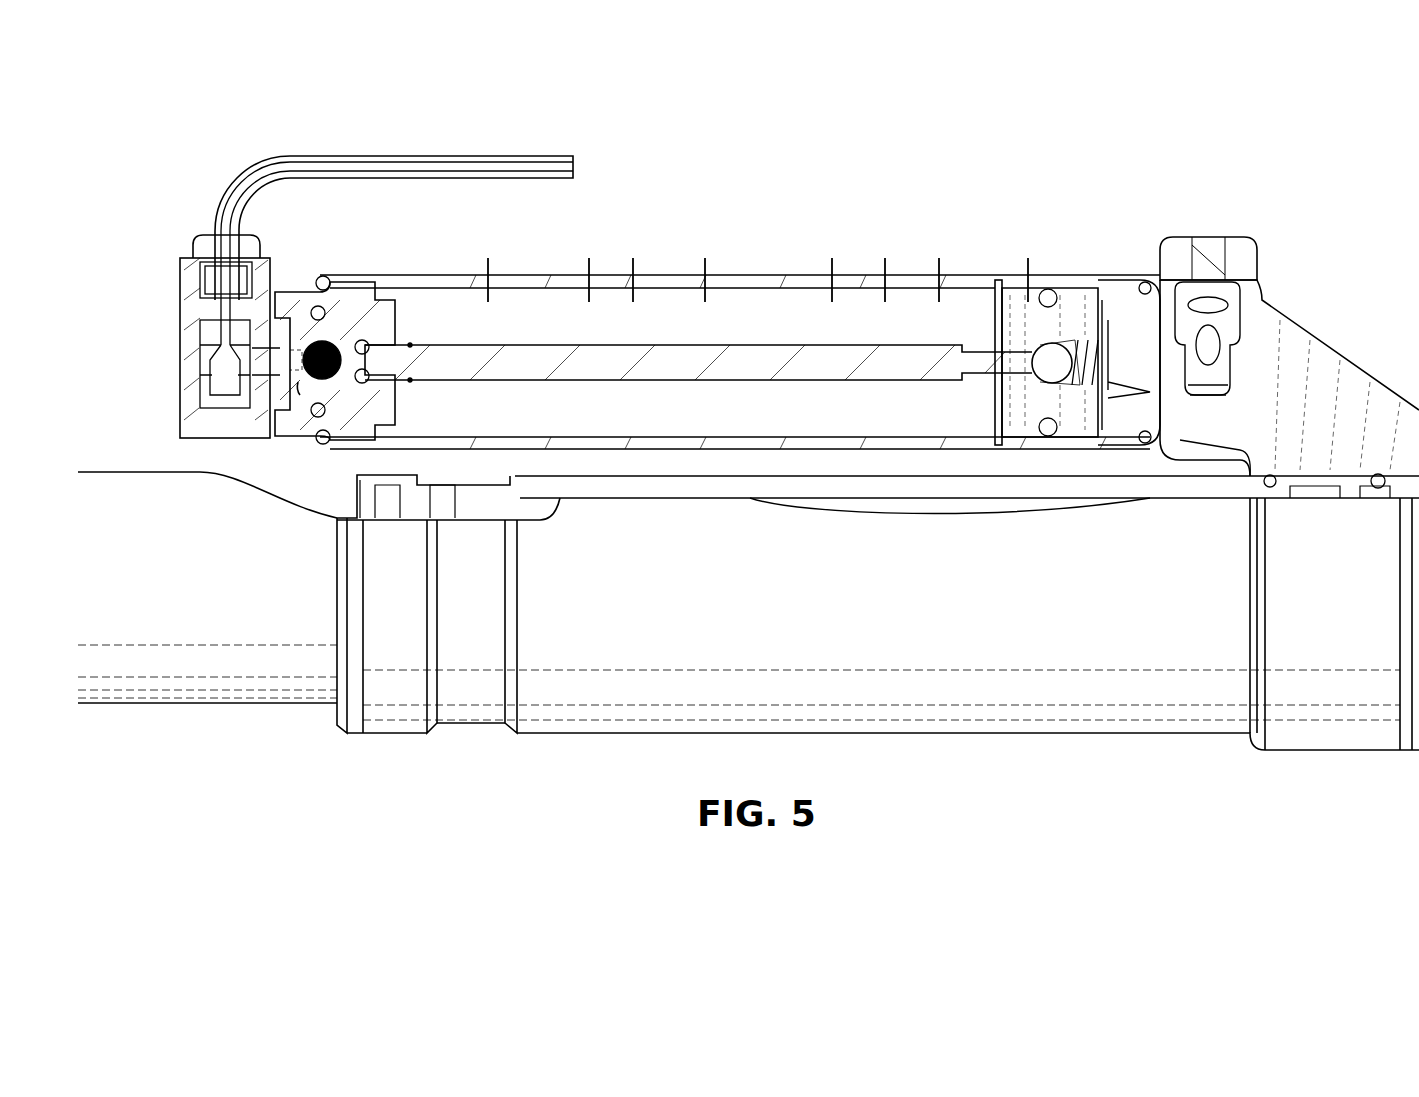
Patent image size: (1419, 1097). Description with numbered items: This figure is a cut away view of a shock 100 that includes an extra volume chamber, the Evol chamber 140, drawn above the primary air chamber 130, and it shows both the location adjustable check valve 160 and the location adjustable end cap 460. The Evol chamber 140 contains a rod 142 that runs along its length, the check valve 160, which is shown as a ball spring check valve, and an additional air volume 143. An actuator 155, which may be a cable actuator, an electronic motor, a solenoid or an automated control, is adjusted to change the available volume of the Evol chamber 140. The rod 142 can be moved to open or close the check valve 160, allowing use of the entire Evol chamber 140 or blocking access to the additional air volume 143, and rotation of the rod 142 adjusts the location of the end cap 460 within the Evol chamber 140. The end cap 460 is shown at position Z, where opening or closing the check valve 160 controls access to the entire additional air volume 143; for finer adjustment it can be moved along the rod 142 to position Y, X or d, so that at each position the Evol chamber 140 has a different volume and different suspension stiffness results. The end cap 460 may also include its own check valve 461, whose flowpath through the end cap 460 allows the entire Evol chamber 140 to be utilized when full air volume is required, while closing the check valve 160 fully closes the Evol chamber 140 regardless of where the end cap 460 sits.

The shock 100 is at (341, 97).
The primary air chamber 130 is at (982, 735).
The Evol chamber 140 is at (776, 285).
The rod 142 is at (472, 365).
The additional air volume 143 is at (558, 300).
The actuator 155 is at (198, 238).
The check valve 160 is at (1086, 295).
The end cap 460 is at (328, 282).
The check valve 461 is at (298, 385).